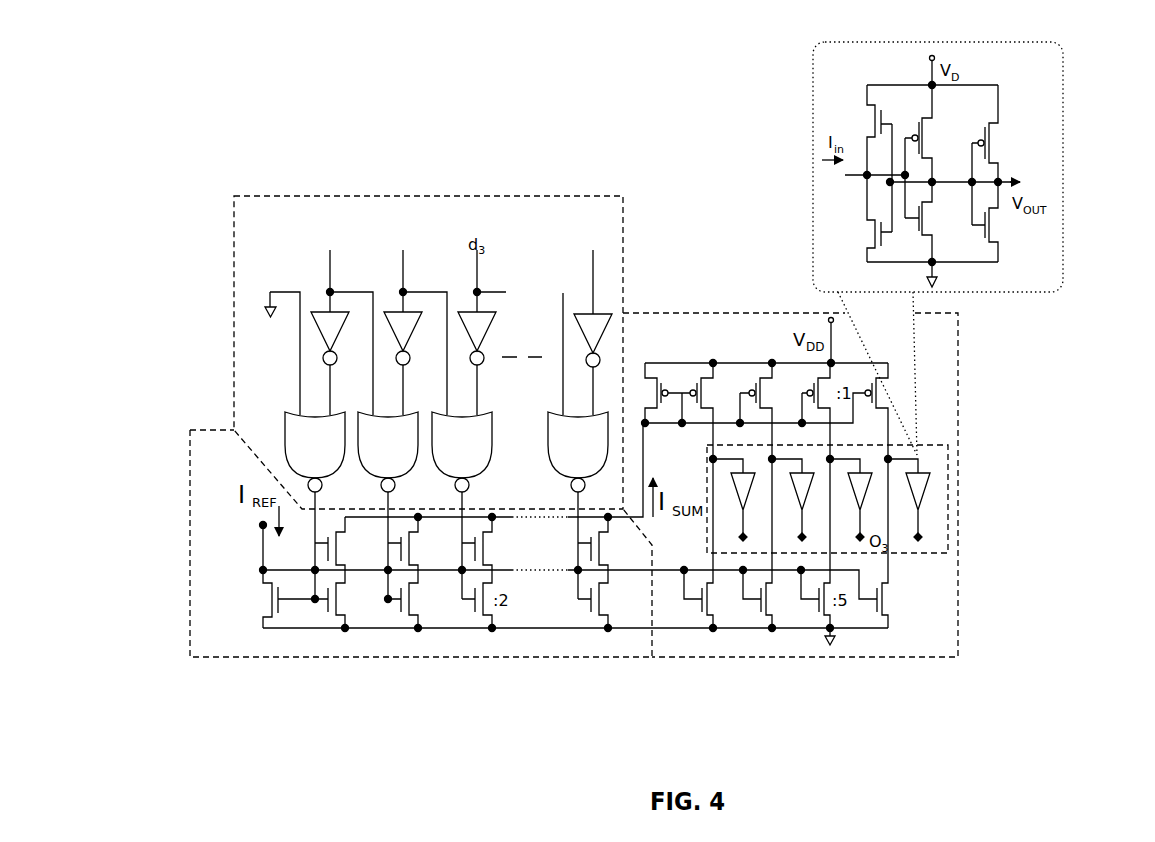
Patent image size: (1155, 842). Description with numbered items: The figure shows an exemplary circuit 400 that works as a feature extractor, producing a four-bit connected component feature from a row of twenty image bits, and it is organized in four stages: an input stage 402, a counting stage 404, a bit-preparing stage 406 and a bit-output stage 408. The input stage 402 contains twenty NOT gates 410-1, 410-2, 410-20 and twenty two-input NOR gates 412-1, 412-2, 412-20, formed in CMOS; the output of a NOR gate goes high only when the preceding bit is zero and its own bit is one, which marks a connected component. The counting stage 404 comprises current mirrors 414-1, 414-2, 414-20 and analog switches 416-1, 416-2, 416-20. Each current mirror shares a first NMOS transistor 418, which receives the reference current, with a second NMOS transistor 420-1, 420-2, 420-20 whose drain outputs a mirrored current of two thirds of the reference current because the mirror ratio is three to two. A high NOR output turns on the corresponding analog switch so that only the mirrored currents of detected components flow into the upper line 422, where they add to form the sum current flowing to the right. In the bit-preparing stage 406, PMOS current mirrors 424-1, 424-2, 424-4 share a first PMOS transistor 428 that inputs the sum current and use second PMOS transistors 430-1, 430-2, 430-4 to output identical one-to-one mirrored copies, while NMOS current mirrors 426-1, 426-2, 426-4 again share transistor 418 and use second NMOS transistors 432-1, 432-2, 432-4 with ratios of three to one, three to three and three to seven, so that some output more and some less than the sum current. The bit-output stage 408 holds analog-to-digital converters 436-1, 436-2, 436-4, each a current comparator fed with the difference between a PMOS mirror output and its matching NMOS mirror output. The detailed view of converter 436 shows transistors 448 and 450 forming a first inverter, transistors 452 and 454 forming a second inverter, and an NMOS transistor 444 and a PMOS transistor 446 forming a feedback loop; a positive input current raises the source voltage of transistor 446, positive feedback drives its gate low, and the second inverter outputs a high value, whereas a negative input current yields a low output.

The circuit 400 is at (596, 60).
The input stage 402 is at (292, 195).
The counting stage 404 is at (242, 658).
The bit-preparing stage 406 is at (853, 658).
The bit-output stage 408 is at (950, 490).
The NOT gate 410-1 is at (315, 308).
The NOT gate 410-2 is at (388, 308).
The NOT gate 410-20 is at (578, 308).
The NOR2 gate 412-1 is at (288, 413).
The NOR2 gate 412-2 is at (365, 458).
The NOR2 gate 412-20 is at (555, 462).
The current mirror 414-1 is at (322, 606).
The current mirror 414-2 is at (398, 606).
The current mirror 414-20 is at (589, 606).
The analog switch 416-1 is at (325, 553).
The analog switch 416-2 is at (399, 553).
The analog switch 416-20 is at (588, 553).
The first NMOS transistor 418 is at (261, 611).
The second NMOS transistor 420-1 is at (350, 605).
The second NMOS transistor 420-2 is at (427, 605).
The second NMOS transistor 420-20 is at (613, 605).
The upper line 422 is at (510, 519).
The PMOS current mirror 424-1 is at (692, 391).
The PMOS current mirror 424-2 is at (751, 391).
The PMOS current mirror 424-4 is at (867, 391).
The NMOS current mirror 426-1 is at (699, 606).
The NMOS current mirror 426-2 is at (757, 606).
The NMOS current mirror 426-4 is at (872, 606).
The first PMOS transistor 428 is at (636, 382).
The second PMOS transistor 430-1 is at (716, 382).
The second PMOS transistor 430-2 is at (778, 382).
The second PMOS transistor 430-4 is at (890, 400).
The second NMOS transistor 432-1 is at (727, 607).
The second NMOS transistor 432-2 is at (778, 607).
The second NMOS transistor 432-4 is at (900, 607).
The analog-to-digital converter 436 is at (1063, 133).
The analog-to-digital converter 436-1 is at (750, 487).
The analog-to-digital converter 436-2 is at (810, 487).
The analog-to-digital converter 436-4 is at (927, 487).
The NMOS transistor 444 is at (865, 123).
The PMOS transistor 446 is at (865, 232).
The transistor 448 is at (930, 132).
The transistor 450 is at (932, 218).
The transistor 452 is at (997, 135).
The transistor 454 is at (998, 235).